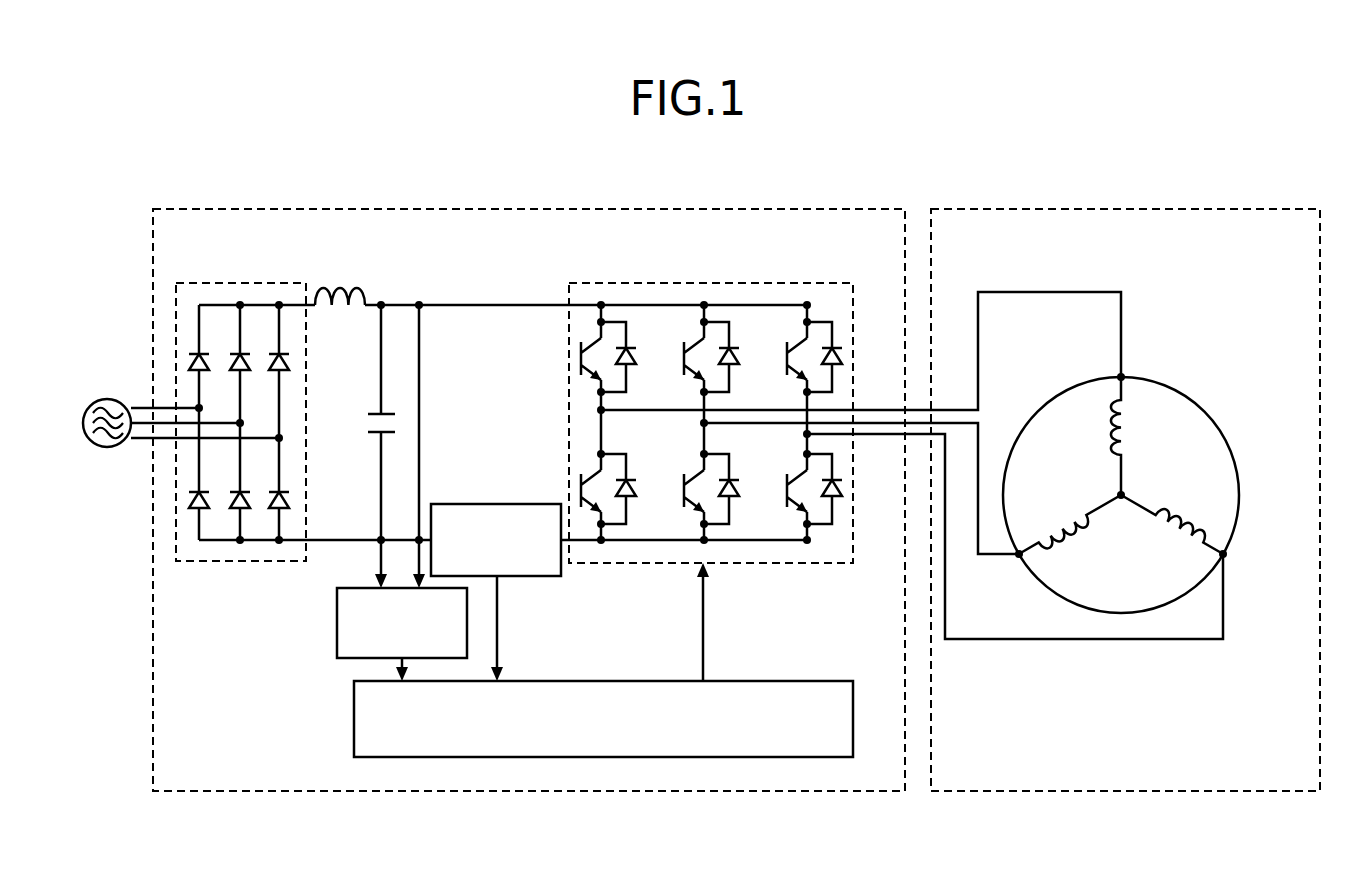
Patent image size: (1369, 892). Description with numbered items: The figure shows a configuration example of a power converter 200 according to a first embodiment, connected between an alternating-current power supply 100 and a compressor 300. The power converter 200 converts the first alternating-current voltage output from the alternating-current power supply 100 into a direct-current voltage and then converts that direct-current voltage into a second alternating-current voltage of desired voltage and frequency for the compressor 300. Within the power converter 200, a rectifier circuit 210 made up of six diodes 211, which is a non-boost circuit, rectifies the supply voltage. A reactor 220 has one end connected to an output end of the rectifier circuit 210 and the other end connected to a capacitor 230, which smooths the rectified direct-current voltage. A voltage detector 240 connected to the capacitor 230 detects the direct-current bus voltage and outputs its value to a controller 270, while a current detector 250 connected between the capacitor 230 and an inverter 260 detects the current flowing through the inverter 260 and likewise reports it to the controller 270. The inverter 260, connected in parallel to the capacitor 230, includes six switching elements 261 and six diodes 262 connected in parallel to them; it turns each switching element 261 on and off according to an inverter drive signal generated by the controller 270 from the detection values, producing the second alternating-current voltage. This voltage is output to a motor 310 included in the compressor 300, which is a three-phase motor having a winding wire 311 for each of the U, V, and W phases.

The alternating-current power supply 100 is at (104, 398).
The power converter 200 is at (812, 208).
The rectifier circuit 210 is at (204, 399).
The diode 211 is at (188, 497).
The reactor 220 is at (348, 284).
The capacitor 230 is at (375, 431).
The voltage detector 240 is at (337, 622).
The current detector 250 is at (521, 577).
The inverter 260 is at (679, 399).
The switching element 261 is at (581, 359).
The diode 262 is at (632, 351).
The controller 270 is at (354, 718).
The compressor 300 is at (1143, 208).
The motor 310 is at (1125, 465).
The winding wire 311 is at (1106, 442).